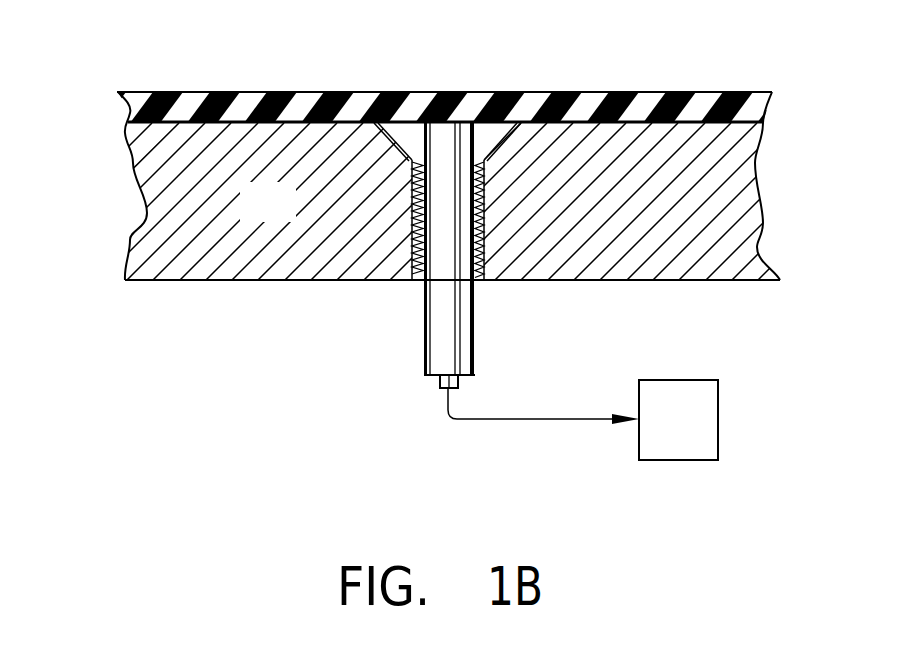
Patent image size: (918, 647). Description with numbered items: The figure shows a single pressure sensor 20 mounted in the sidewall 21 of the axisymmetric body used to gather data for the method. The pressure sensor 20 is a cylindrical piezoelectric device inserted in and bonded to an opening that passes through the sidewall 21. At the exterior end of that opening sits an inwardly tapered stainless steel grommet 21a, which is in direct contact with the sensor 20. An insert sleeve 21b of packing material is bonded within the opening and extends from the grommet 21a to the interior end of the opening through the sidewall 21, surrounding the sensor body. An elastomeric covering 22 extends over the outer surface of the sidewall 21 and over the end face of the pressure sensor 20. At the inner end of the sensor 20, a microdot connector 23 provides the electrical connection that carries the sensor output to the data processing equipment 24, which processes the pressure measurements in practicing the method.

The pressure sensor 20 is at (447, 142).
The sidewall 21 is at (277, 213).
The stainless steel grommet 21a is at (503, 93).
The insert sleeve 21b is at (419, 281).
The elastomeric covering 22 is at (310, 93).
The microdot connector 23 is at (438, 381).
The data processing equipment 24 is at (693, 432).